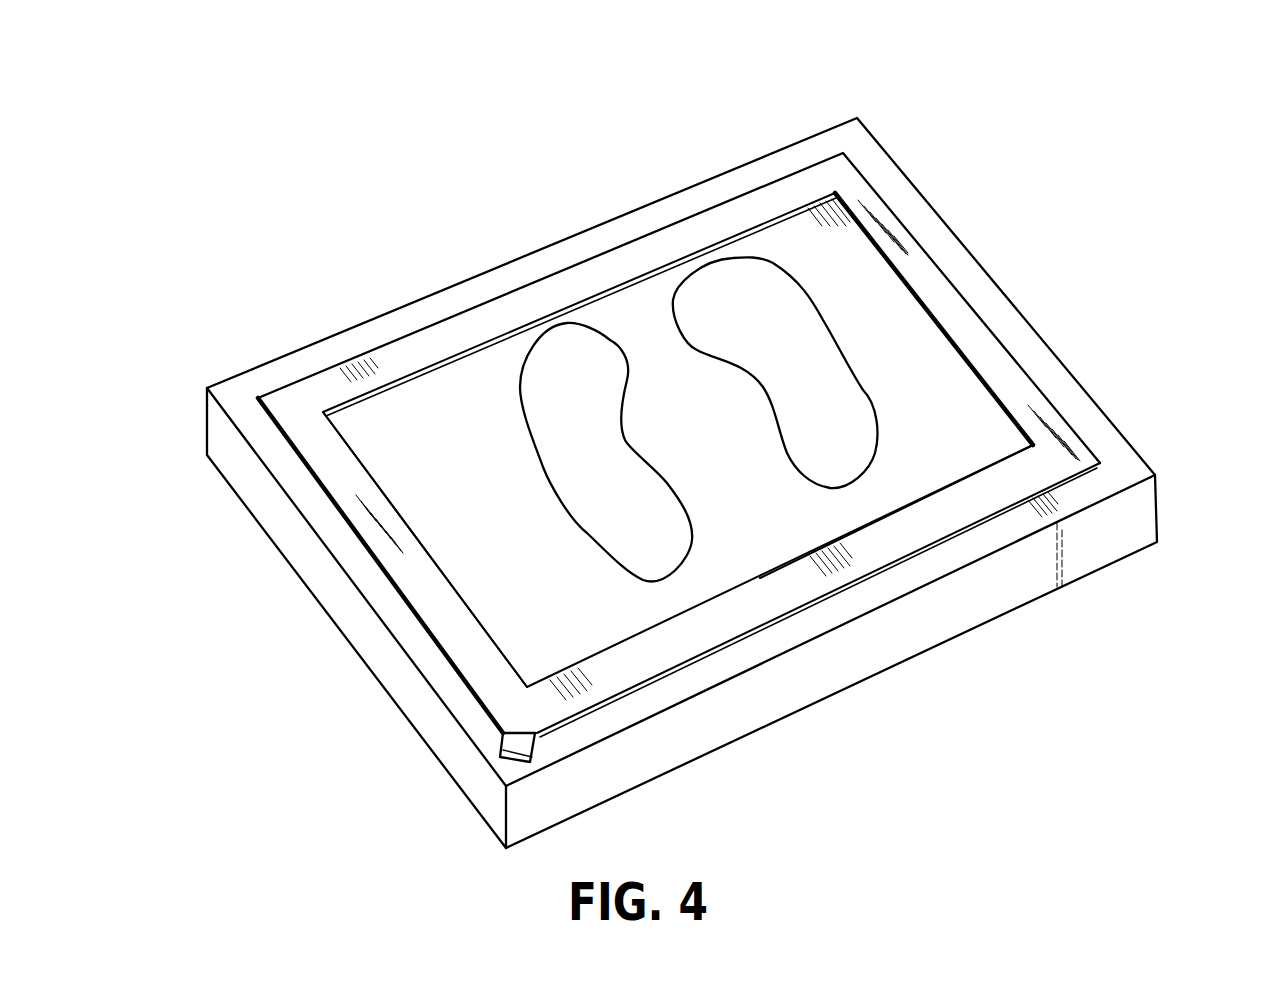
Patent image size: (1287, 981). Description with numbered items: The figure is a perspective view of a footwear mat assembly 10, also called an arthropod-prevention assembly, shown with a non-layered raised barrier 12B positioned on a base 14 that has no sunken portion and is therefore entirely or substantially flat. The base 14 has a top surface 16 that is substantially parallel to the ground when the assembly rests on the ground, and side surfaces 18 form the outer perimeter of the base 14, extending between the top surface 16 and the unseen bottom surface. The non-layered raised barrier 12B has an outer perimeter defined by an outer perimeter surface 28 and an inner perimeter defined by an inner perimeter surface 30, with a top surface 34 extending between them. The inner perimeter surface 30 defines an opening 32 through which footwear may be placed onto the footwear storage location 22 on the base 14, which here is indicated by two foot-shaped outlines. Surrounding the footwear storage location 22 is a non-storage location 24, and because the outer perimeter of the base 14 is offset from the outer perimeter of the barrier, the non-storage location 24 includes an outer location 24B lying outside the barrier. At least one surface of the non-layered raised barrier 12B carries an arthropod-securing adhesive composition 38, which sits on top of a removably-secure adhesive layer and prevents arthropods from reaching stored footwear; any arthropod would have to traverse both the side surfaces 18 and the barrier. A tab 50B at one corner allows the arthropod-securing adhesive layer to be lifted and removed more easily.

The footwear mat assembly 10 is at (235, 93).
The base 14 is at (868, 689).
The side surfaces 18 is at (1008, 597).
The non-layered raised barrier 12B is at (866, 188).
The top surface 34 is at (327, 377).
The arthropod-securing adhesive composition 38 is at (410, 580).
The outer perimeter surface 28 is at (1077, 477).
The non-storage location 24 is at (897, 300).
The inner perimeter surface 30 is at (480, 347).
The outer location 24B is at (1105, 447).
The opening 32 is at (979, 401).
The top surface 16 is at (388, 463).
The footwear storage location 22 is at (558, 363).
The tab 50B is at (498, 740).